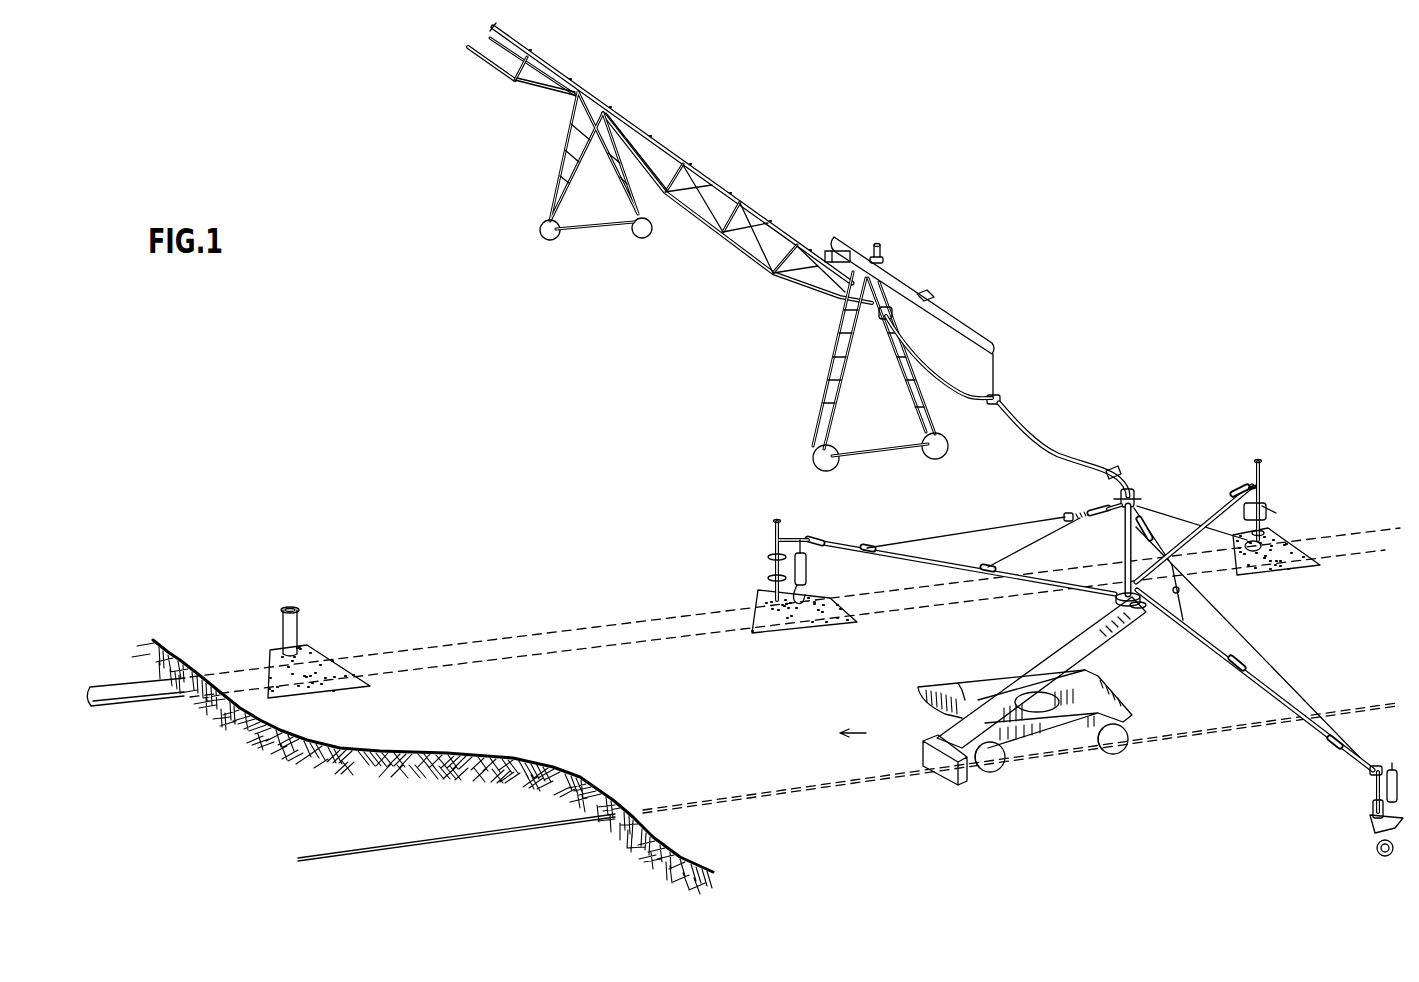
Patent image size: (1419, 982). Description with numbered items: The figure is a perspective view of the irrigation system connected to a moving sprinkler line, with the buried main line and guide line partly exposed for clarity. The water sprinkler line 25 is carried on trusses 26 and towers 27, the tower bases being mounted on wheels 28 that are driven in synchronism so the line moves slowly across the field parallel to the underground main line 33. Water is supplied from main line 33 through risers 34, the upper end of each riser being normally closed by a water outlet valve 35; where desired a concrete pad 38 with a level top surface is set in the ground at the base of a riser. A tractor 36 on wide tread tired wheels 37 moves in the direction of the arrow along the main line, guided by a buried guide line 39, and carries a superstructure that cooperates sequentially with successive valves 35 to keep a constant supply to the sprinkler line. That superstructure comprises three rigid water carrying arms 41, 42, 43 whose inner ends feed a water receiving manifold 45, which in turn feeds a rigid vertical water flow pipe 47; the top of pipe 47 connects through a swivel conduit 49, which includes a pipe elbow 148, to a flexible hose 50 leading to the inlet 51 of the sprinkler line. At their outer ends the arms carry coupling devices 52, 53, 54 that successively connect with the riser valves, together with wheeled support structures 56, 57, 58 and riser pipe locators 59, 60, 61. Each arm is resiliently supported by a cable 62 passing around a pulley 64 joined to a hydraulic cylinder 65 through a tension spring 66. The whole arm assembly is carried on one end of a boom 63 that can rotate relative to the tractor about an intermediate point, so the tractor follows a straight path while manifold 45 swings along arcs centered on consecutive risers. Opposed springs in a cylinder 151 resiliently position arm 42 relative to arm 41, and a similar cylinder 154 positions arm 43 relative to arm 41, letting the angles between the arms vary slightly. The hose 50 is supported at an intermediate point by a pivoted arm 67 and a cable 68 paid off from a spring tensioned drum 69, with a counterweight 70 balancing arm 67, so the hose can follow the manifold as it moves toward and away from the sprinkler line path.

The water sprinkler line 25 is at (737, 196).
The truss 26 is at (503, 78).
The tower 27 is at (566, 150).
The wheels 28 is at (634, 234).
The underground main line 33 is at (138, 680).
The riser 34 is at (282, 630).
The water outlet valve 35 is at (291, 598).
The tractor 36 is at (1046, 757).
The wide tread tired wheels 37 is at (1122, 735).
The concrete pad 38 is at (320, 658).
The guide line 39 is at (490, 847).
The water carrying arm 41 is at (1222, 523).
The water carrying arm 42 is at (955, 562).
The water carrying arm 43 is at (1252, 680).
The water receiving manifold 45 is at (1145, 611).
The water flow pipe 47 is at (1124, 548).
The swivel conduit 49 is at (1145, 483).
The flexible hose 50 is at (1062, 453).
The inlet 51 is at (881, 321).
The coupling device 52 is at (1270, 461).
The coupling device 53 is at (764, 528).
The coupling device 54 is at (1393, 760).
The wheeled support structure 56 is at (1270, 543).
The wheeled support structure 57 is at (820, 585).
The wheeled support structure 58 is at (1395, 857).
The riser pipe locator 59 is at (1268, 500).
The riser pipe locator 60 is at (767, 568).
The riser pipe locator 61 is at (1372, 822).
The cable 62 is at (980, 540).
The boom 63 is at (1035, 656).
The pulley 64 is at (1067, 515).
The hydraulic cylinder 65 is at (1110, 515).
The tension spring 66 is at (1095, 508).
The pivoted arm 67 is at (895, 272).
The cable 68 is at (998, 382).
The spring tensioned drum 69 is at (930, 296).
The counterweight 70 is at (831, 238).
The pipe elbow 148 is at (1120, 474).
The cylinder 151 is at (1112, 597).
The cylinder 154 is at (1188, 588).